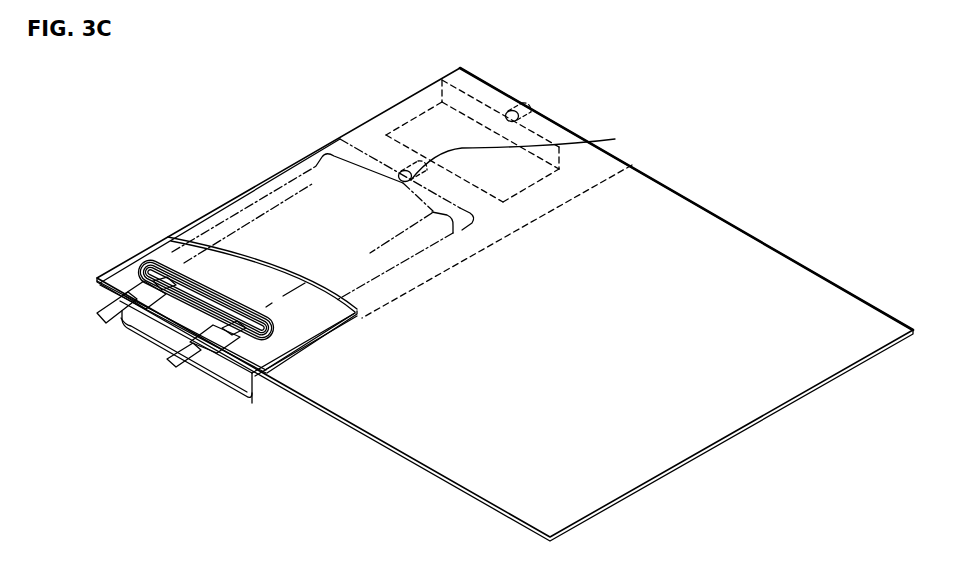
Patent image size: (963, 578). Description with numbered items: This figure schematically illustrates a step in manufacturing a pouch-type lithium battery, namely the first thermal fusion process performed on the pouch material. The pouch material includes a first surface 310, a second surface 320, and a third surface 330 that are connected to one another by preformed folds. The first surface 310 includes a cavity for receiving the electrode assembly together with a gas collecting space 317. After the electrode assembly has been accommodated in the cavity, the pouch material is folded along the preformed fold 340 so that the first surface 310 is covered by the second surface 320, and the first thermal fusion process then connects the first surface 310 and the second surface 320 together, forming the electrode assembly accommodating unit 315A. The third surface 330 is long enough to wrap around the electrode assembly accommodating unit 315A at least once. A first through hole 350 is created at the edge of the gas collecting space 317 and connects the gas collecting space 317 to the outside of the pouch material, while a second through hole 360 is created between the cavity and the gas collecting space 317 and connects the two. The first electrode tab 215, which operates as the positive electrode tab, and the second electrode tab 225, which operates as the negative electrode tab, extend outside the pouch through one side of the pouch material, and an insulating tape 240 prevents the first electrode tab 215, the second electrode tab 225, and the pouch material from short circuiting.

The third surface 330 is at (378, 441).
The preformed fold 340 is at (110, 268).
The gas collecting space 317 is at (445, 122).
The first through hole 350 is at (520, 111).
The second through hole 360 is at (616, 138).
The second surface 320 is at (308, 343).
The first surface 310 is at (262, 358).
The electrode assembly accommodating unit 315A is at (207, 370).
The insulating tape 240 is at (122, 294).
The first electrode tab 215 is at (98, 319).
The second electrode tab 225 is at (162, 355).